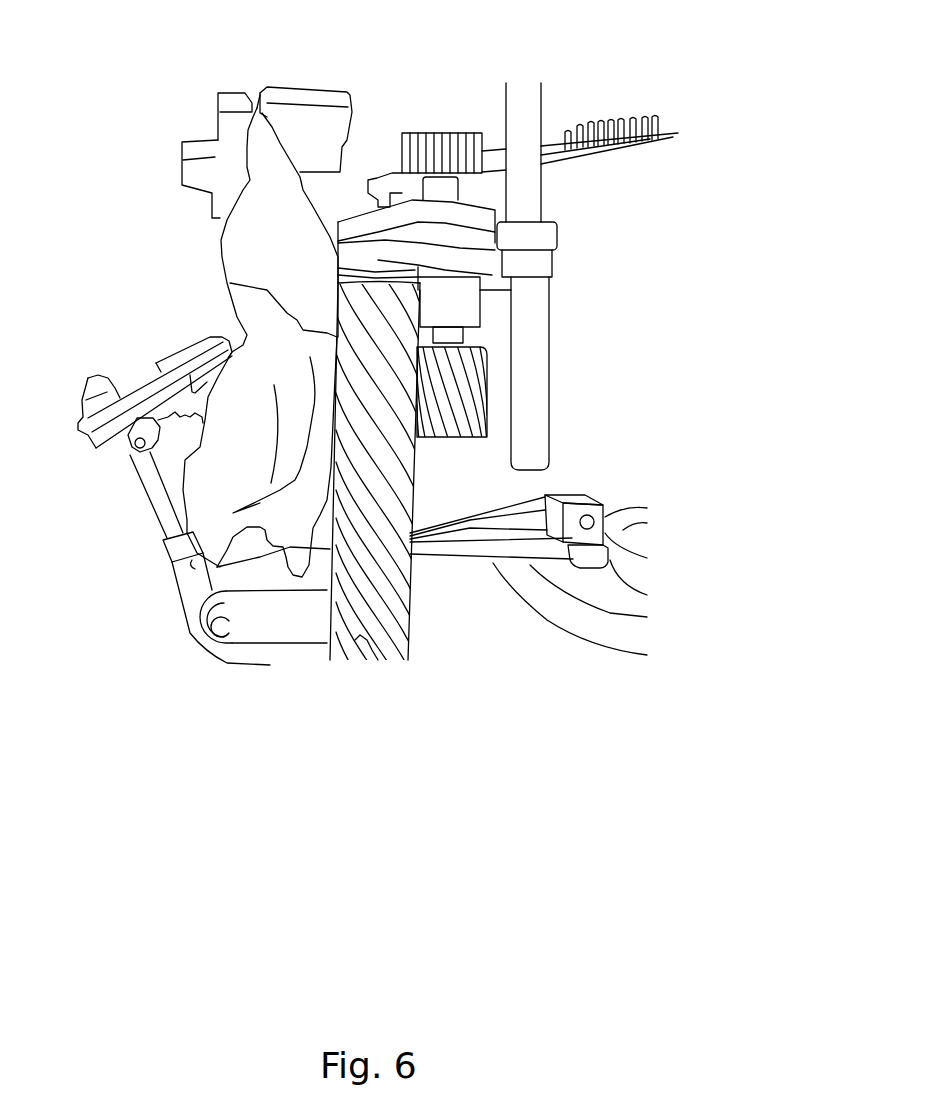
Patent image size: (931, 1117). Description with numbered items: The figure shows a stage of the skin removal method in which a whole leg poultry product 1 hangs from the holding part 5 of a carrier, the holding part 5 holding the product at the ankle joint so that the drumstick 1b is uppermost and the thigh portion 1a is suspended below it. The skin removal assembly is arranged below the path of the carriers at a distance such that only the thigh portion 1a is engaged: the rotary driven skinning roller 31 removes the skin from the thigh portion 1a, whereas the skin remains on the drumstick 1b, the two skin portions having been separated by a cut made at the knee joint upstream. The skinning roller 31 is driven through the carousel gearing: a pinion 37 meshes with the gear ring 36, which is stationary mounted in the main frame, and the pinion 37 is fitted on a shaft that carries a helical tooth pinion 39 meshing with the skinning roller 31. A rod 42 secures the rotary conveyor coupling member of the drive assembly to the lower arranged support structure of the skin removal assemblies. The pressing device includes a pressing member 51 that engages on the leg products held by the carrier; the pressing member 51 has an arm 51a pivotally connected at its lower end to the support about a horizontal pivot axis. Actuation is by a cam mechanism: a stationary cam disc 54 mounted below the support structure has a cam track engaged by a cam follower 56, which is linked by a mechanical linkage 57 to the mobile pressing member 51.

The whole leg poultry product 1 is at (217, 308).
The thigh portion 1a is at (261, 459).
The drumstick 1b is at (281, 269).
The holding part 5 is at (165, 143).
The skinning roller 31 is at (378, 660).
The gear ring 36 is at (670, 134).
The pinion 37 is at (385, 162).
The helical tooth pinion 39 is at (448, 438).
The rod 42 is at (522, 92).
The pressing member 51 is at (100, 467).
The arm 51a is at (167, 547).
The cam disc 54 is at (617, 603).
The cam follower 56 is at (600, 480).
The mechanical linkage 57 is at (470, 593).